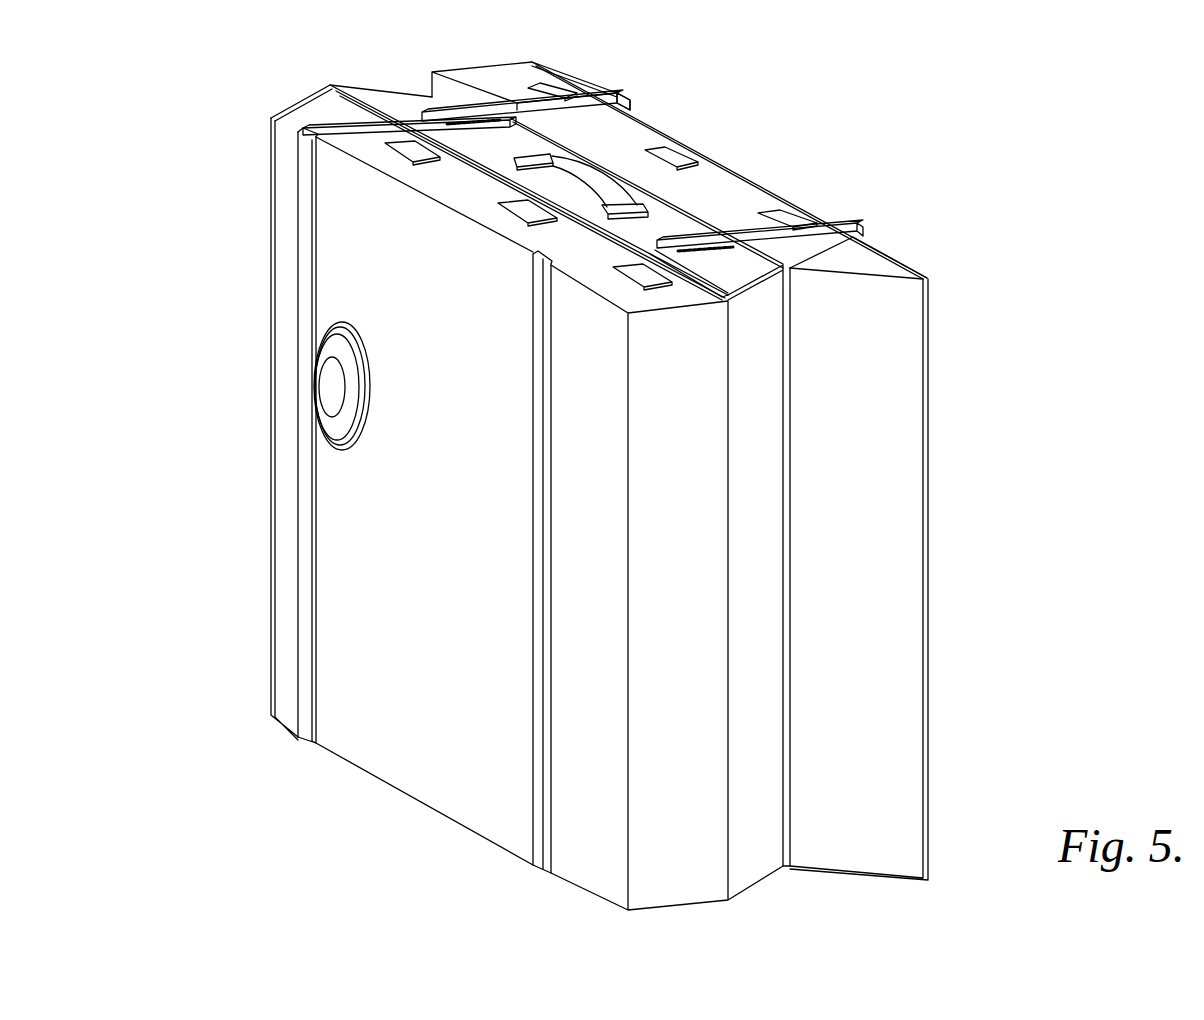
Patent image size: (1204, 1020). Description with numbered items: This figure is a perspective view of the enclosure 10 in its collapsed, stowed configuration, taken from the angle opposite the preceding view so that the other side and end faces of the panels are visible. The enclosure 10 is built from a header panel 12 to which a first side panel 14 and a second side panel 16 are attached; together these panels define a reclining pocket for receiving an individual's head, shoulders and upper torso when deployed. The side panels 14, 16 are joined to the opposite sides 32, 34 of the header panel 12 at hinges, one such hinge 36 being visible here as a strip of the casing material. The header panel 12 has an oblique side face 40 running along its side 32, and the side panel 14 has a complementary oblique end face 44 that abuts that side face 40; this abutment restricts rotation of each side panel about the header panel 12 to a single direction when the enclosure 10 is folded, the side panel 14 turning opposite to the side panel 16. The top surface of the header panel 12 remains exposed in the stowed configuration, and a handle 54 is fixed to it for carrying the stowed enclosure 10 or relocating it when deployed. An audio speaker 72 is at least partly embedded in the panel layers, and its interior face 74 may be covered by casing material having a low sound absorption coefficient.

The enclosure 10 is at (1000, 150).
The header panel 12 is at (355, 80).
The first side panel 14 is at (915, 265).
The second side panel 16 is at (262, 235).
The side of header panel 32 is at (735, 275).
The side of header panel 34 is at (400, 100).
The hinge 36 is at (790, 848).
The oblique side face 40 is at (745, 875).
The oblique end face 44 is at (885, 603).
The handle 54 is at (592, 165).
The audio speaker 72 is at (350, 318).
The interior face of speaker 74 is at (350, 400).